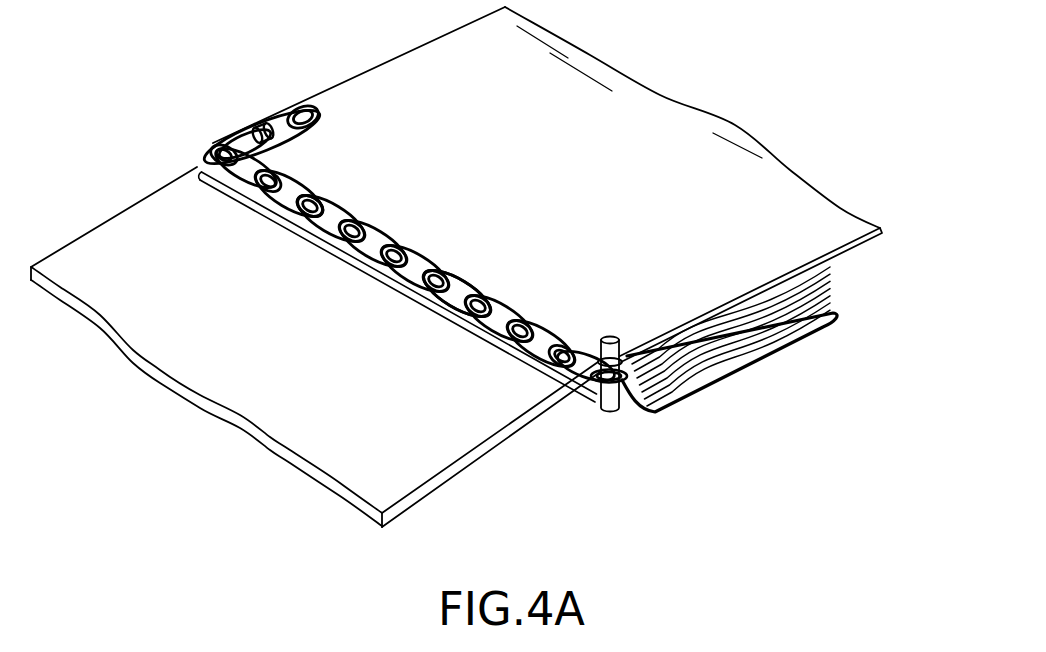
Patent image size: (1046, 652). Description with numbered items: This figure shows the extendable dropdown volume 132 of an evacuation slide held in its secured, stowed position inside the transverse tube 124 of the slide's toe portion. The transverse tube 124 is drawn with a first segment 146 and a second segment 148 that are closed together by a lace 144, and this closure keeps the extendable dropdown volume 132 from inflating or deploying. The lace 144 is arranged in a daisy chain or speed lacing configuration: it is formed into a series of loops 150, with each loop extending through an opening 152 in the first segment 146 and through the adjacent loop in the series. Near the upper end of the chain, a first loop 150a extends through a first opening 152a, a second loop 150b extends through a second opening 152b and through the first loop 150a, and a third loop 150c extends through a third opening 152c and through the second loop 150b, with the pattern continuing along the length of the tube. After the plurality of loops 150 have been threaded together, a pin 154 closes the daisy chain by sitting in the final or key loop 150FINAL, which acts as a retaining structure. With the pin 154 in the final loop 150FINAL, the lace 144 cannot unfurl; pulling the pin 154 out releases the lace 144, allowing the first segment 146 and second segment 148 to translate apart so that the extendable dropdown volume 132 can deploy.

The transverse tube 124 is at (655, 72).
The extendable dropdown volume 132 is at (833, 322).
The lace 144 is at (405, 218).
The first segment 146 is at (345, 100).
The second segment 148 is at (163, 200).
The loops 150 is at (425, 290).
The first loop 150a is at (296, 130).
The second loop 150b is at (220, 132).
The third loop 150c is at (243, 200).
The final loop 150FINAL is at (597, 405).
The opening 152 is at (478, 270).
The first opening 152a is at (293, 102).
The second opening 152b is at (250, 123).
The third opening 152c is at (207, 147).
The pin 154 is at (608, 337).